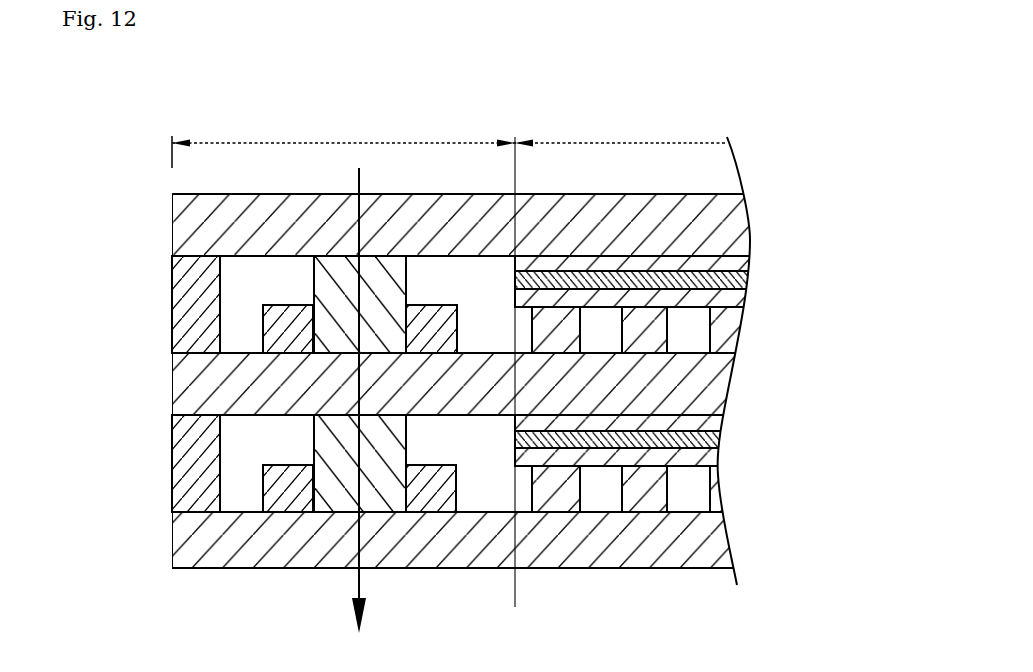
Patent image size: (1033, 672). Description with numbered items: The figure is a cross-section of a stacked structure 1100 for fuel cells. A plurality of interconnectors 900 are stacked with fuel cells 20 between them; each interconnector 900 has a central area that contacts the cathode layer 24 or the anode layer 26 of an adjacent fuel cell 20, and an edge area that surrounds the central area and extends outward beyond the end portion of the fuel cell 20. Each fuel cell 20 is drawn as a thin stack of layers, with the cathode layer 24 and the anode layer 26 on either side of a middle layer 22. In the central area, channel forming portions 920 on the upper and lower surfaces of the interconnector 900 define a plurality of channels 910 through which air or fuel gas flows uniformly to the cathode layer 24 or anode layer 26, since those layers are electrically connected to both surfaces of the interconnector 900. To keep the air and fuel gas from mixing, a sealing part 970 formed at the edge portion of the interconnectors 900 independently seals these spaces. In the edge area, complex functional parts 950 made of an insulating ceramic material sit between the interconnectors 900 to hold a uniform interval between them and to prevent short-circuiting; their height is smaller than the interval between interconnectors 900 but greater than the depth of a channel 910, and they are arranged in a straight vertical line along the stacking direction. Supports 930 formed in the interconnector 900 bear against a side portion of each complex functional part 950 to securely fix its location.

The stacked structure 1100 is at (481, 72).
The fuel cell 20 is at (677, 379).
The buried insulating layer 22 is at (718, 436).
The cathode layer 24 is at (672, 420).
The anode layer 26 is at (678, 458).
The interconnector 900 is at (192, 552).
The channel 910 is at (611, 489).
The channel forming portion 920 is at (642, 495).
The support 930 is at (282, 332).
The complex functional part 950 is at (340, 283).
The sealing part 970 is at (182, 468).